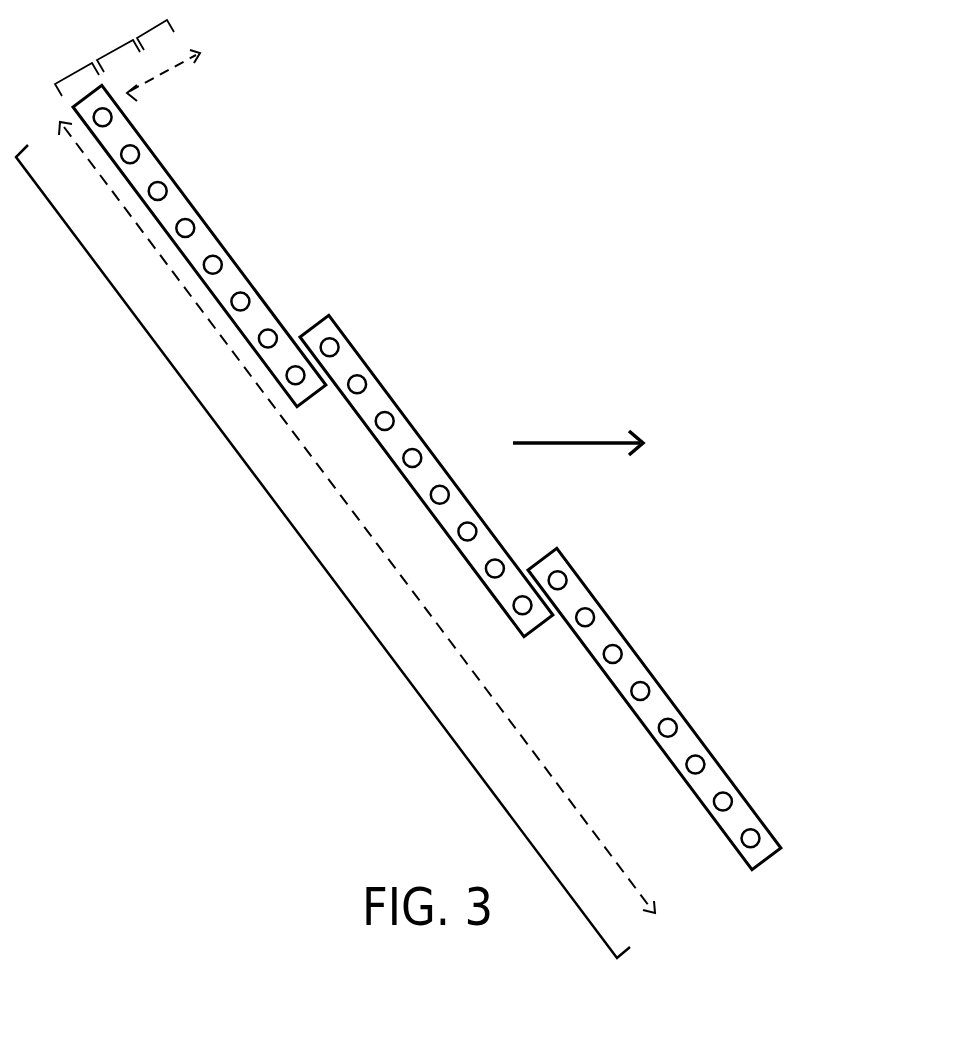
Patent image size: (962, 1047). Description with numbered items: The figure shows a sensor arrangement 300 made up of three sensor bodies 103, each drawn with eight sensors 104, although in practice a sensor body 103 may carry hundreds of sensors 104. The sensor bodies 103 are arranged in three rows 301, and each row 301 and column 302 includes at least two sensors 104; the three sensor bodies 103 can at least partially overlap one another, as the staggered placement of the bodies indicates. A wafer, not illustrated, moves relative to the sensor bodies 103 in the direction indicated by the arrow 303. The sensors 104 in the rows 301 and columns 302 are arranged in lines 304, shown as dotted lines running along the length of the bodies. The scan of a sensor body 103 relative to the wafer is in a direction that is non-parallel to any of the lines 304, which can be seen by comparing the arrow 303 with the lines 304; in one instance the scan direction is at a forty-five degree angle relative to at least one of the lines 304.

The arrangement 300 is at (560, 86).
The sensor body 103 is at (185, 191).
The sensor 104 is at (213, 264).
The row 301 is at (105, 51).
The column 302 is at (323, 551).
The arrow 303 is at (578, 434).
The line 304 is at (357, 481).